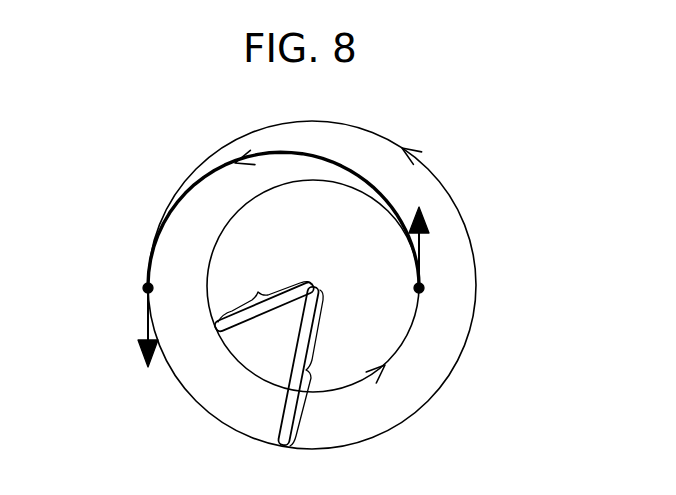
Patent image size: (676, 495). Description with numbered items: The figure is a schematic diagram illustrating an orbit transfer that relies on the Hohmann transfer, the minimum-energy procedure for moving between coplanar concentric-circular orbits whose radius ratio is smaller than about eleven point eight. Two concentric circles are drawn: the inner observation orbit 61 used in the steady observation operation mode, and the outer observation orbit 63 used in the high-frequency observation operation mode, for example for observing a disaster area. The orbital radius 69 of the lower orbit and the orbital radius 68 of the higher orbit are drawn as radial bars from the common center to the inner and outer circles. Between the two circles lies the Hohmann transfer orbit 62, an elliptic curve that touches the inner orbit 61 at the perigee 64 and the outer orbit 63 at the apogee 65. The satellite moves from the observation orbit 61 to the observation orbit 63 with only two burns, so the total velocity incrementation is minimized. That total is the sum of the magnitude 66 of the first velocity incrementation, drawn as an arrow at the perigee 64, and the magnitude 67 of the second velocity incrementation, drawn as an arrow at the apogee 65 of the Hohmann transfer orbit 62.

The observation orbit 61 is at (410, 333).
The Hohmann transfer orbit 62 is at (267, 155).
The observation orbit 63 is at (376, 131).
The perigee 64 is at (419, 288).
The apogee 65 is at (148, 288).
The magnitude of the velocity incrementation ΔV1 66 is at (420, 247).
The magnitude of the velocity incrementation ΔV2 67 is at (148, 330).
The orbital radius of the higher orbit 68 is at (281, 424).
The orbital radius of the lower orbit 69 is at (273, 309).